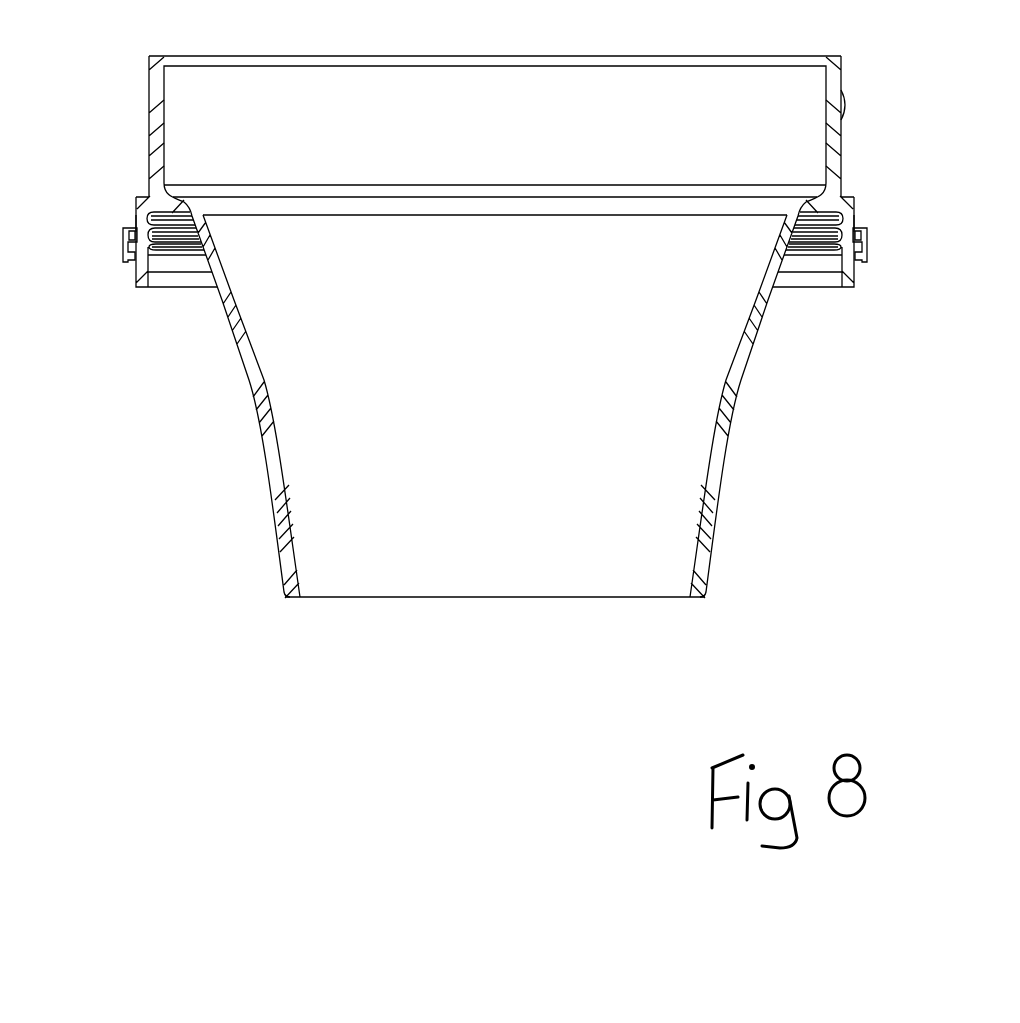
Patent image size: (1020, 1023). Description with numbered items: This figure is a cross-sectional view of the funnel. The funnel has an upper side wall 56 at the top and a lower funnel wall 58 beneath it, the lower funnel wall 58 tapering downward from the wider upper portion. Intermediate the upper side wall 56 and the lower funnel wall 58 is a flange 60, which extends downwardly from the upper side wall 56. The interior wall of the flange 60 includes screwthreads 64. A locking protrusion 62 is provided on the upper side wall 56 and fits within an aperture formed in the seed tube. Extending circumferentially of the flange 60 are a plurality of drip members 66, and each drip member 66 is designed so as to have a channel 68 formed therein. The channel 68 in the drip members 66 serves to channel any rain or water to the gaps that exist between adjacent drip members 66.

The upper side wall 56 is at (157, 95).
The lower funnel wall 58 is at (710, 537).
The flange 60 is at (137, 197).
The locking protrusion 62 is at (843, 103).
The screwthreads 64 is at (179, 250).
The drip members 66 is at (125, 253).
The channel 68 is at (124, 212).